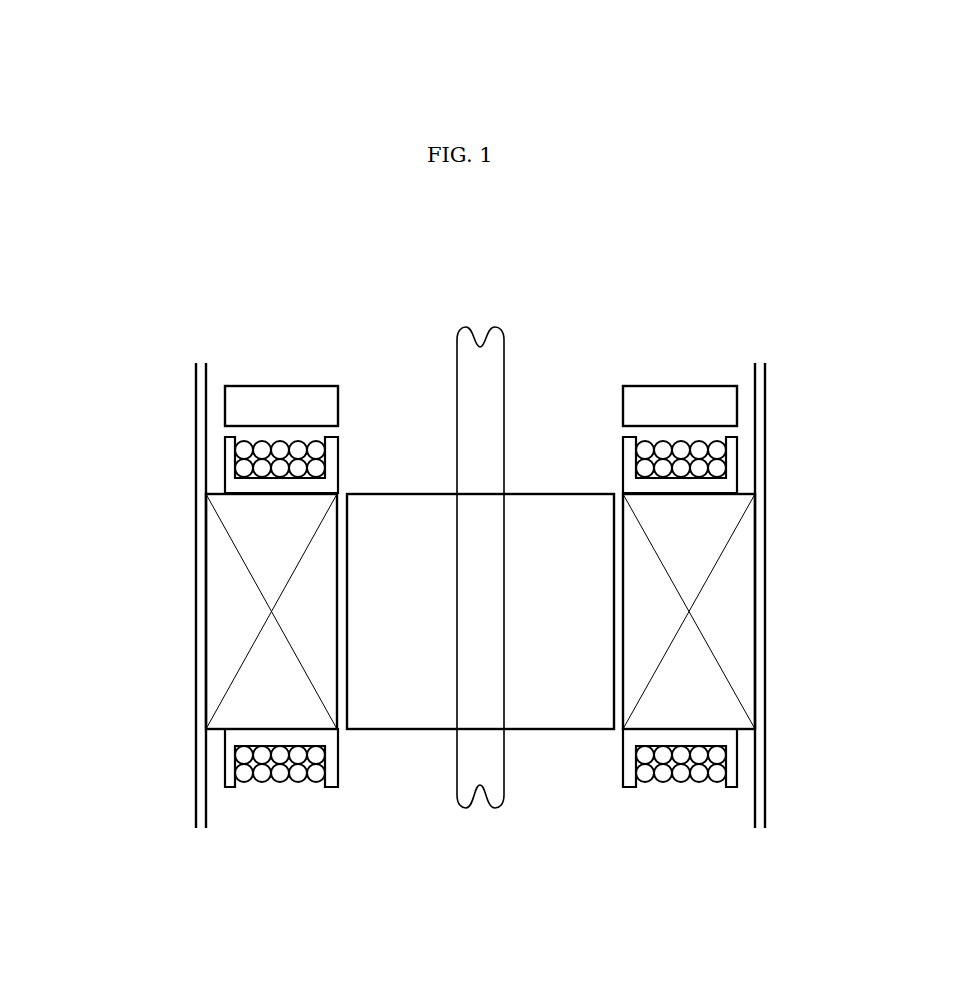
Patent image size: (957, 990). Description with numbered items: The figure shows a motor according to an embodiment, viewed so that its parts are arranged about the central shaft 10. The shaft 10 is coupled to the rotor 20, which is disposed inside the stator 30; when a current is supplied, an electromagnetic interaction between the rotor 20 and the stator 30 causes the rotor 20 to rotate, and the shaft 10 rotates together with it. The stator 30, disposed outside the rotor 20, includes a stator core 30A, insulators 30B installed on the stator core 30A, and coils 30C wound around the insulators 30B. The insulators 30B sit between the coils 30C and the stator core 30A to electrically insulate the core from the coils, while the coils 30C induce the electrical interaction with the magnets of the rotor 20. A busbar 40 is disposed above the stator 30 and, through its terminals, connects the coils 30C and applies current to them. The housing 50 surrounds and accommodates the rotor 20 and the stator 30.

The shaft 10 is at (483, 318).
The rotor 20 is at (550, 478).
The stator 30 is at (753, 613).
The stator core 30A is at (743, 543).
The insulators 30B is at (732, 468).
The coils 30C is at (719, 451).
The busbar 40 is at (665, 380).
The housing 50 is at (178, 605).